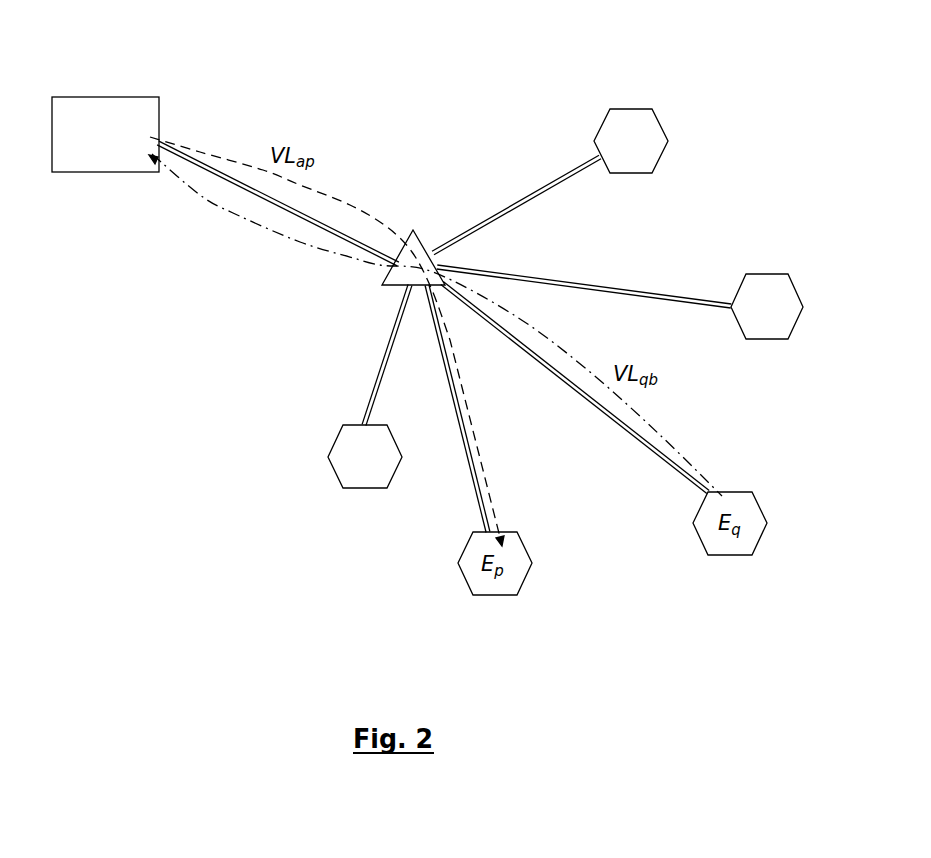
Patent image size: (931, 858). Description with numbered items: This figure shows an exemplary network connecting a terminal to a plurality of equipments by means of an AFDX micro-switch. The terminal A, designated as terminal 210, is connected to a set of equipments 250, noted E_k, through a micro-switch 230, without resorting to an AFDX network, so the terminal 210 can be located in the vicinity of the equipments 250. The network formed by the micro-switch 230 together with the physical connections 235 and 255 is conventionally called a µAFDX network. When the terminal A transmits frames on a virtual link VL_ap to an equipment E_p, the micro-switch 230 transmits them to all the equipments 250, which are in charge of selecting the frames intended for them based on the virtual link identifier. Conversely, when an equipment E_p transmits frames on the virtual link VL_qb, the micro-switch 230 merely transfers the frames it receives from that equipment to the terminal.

The terminal 210 is at (77, 97).
The micro-switch 230 is at (408, 230).
The physical connection 235 is at (247, 193).
The equipments 250 is at (635, 109).
The physical connection 255 is at (373, 377).